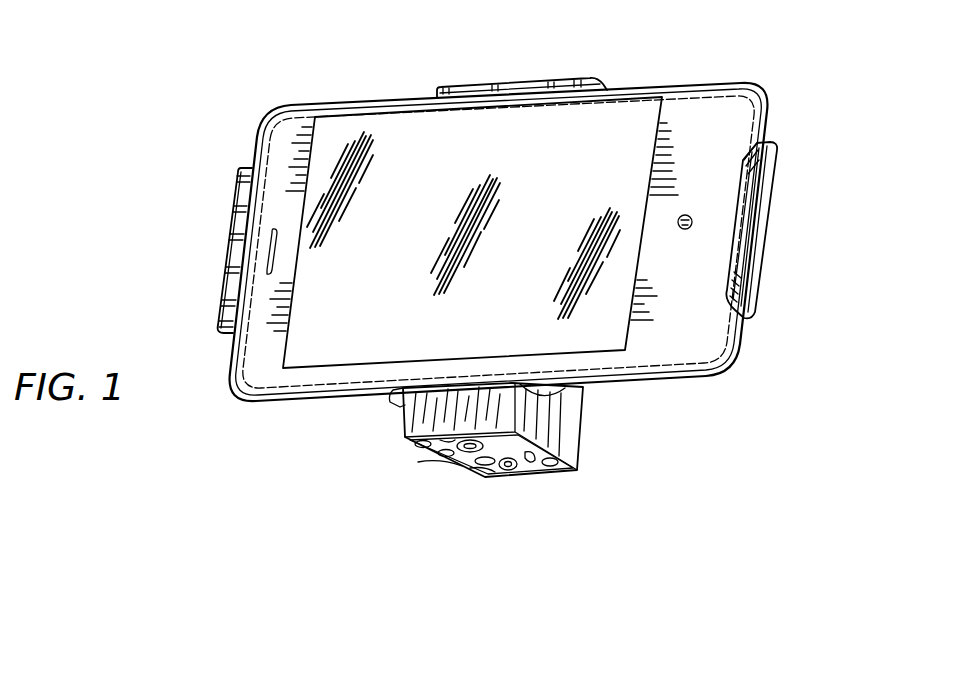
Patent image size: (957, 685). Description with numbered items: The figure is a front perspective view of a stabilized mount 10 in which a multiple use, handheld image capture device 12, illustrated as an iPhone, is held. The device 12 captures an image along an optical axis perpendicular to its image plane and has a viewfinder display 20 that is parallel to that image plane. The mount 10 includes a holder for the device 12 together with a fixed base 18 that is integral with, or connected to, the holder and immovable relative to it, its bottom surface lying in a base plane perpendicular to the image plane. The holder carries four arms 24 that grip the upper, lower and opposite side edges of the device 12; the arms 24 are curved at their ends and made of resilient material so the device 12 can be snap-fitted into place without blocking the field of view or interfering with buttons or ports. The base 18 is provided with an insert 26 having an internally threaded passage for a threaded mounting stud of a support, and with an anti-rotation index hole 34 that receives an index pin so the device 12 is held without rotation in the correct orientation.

The stabilized mount 10 is at (483, 277).
The image capture device 12 is at (698, 394).
The fixed base 18 is at (519, 467).
The viewfinder display 20 is at (367, 107).
The arms 24 is at (538, 77).
The insert 26 is at (506, 471).
The anti-rotation index hole 34 is at (458, 451).